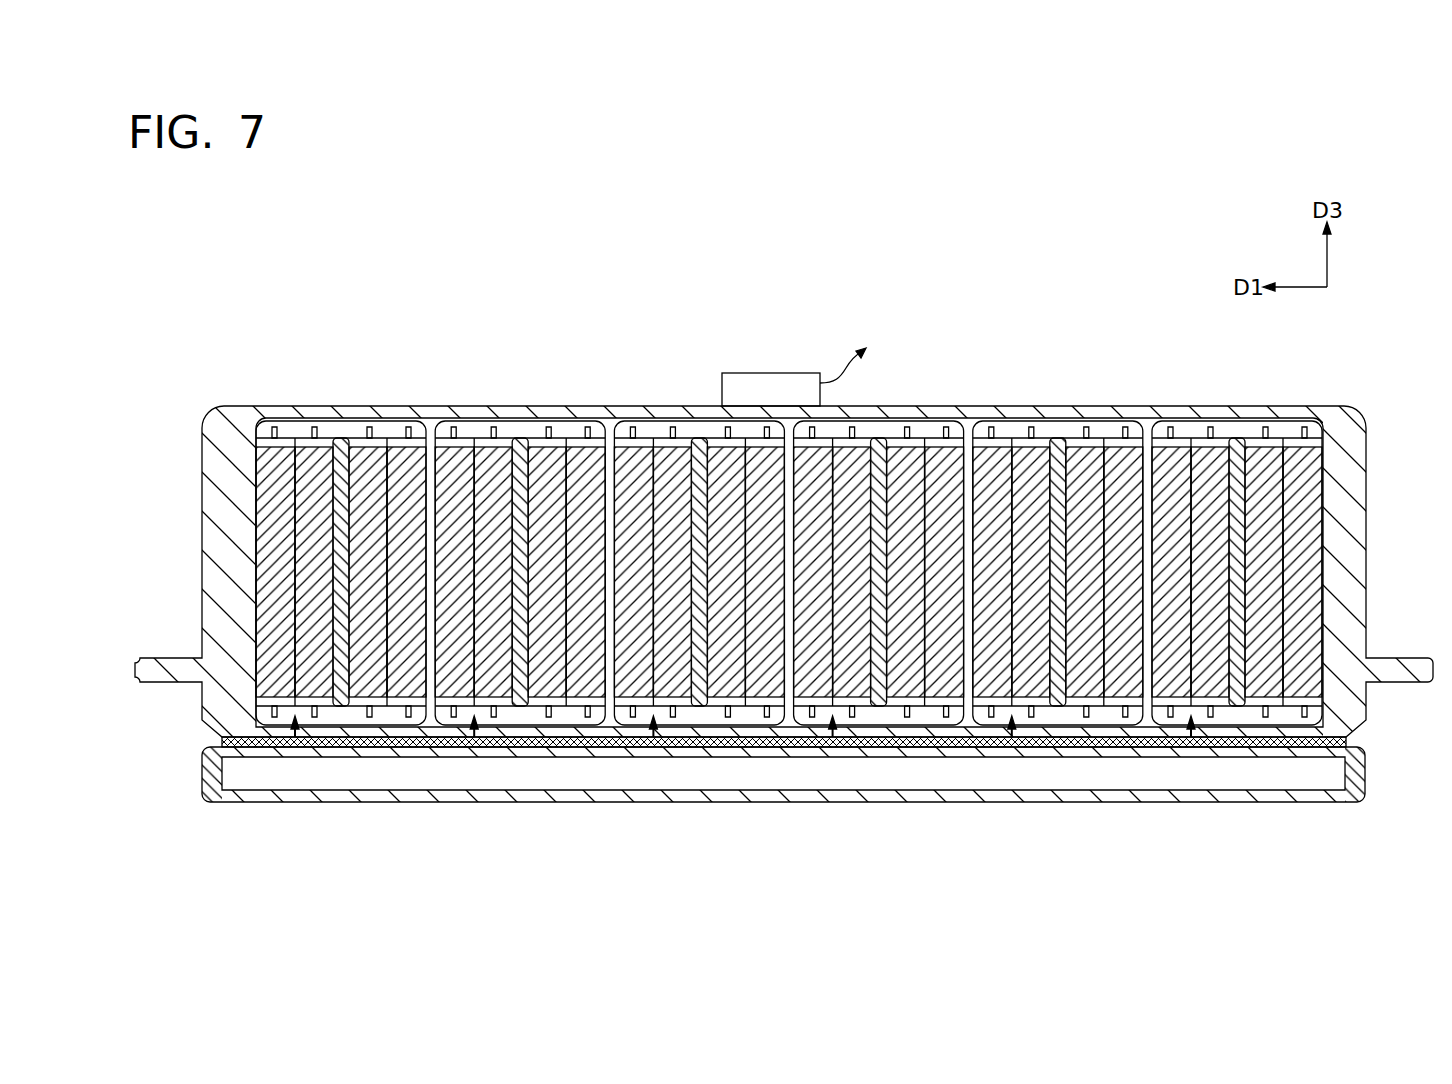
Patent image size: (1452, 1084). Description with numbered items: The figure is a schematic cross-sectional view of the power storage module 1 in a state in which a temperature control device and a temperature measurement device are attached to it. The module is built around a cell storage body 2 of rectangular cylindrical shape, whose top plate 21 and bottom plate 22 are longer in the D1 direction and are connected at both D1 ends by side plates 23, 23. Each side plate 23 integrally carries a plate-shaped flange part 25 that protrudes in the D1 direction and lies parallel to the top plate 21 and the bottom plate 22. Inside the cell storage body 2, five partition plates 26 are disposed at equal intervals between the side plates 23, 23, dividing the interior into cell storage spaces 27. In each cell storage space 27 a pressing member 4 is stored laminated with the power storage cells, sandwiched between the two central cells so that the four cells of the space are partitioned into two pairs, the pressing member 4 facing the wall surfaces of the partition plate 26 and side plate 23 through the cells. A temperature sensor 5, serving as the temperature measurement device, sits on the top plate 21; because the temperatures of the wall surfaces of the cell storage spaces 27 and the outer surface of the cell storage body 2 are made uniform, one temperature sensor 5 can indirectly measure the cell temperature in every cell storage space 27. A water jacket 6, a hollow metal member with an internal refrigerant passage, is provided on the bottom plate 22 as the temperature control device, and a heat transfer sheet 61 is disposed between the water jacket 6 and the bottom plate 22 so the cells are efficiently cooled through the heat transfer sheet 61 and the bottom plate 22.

The power storage module 1 is at (866, 254).
The cell storage body 2 is at (252, 396).
The top plate 21 is at (548, 406).
The bottom plate 22 is at (597, 737).
The side plate 23 is at (198, 458).
The flange part 25 is at (152, 657).
The partition plate 26 is at (431, 432).
The cell storage space 27 is at (295, 737).
The pressing member 4 is at (341, 710).
The temperature sensor 5 is at (773, 372).
The water jacket 6 is at (757, 802).
The heat transfer sheet 61 is at (1350, 742).